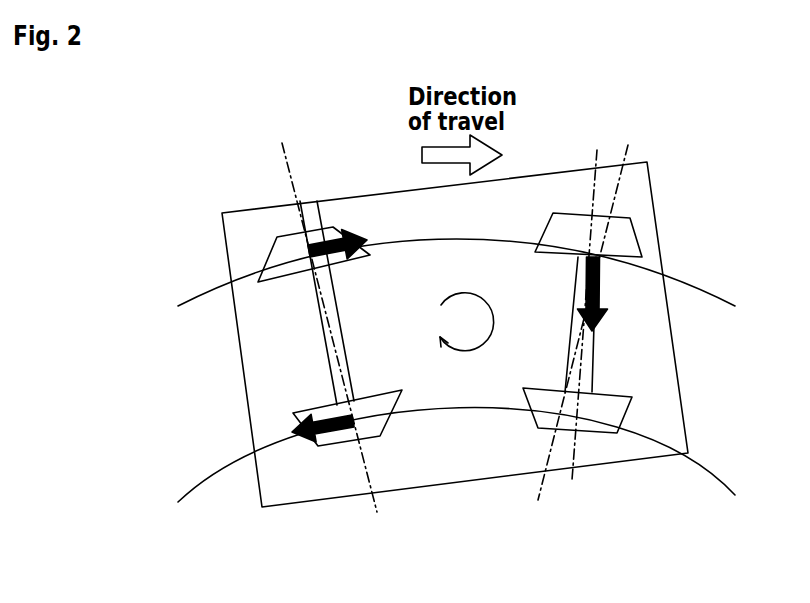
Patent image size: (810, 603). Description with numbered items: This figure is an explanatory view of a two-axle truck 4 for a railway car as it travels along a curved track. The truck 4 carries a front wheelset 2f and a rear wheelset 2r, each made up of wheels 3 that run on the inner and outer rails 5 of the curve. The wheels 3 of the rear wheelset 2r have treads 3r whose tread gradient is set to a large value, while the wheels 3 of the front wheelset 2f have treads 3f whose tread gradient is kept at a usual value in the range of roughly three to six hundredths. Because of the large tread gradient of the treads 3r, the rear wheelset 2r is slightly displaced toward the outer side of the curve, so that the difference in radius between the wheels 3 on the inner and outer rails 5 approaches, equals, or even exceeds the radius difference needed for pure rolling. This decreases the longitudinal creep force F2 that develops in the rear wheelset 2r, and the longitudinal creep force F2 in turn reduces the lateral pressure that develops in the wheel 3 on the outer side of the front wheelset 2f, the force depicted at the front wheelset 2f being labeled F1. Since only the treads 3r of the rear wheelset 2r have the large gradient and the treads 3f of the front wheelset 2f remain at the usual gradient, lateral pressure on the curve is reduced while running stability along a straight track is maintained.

The rear wheelset 2r is at (318, 303).
The front wheelset 2f is at (587, 357).
The wheel 3 is at (280, 256).
The treads of the wheels in the rear wheelset 3r is at (335, 228).
The treads of the wheels in the front wheelset 3f is at (641, 236).
The two-axle truck 4 is at (446, 473).
The rails 5 is at (450, 240).
The force F1 is at (602, 300).
The longitudinal creep force F2 is at (313, 233).